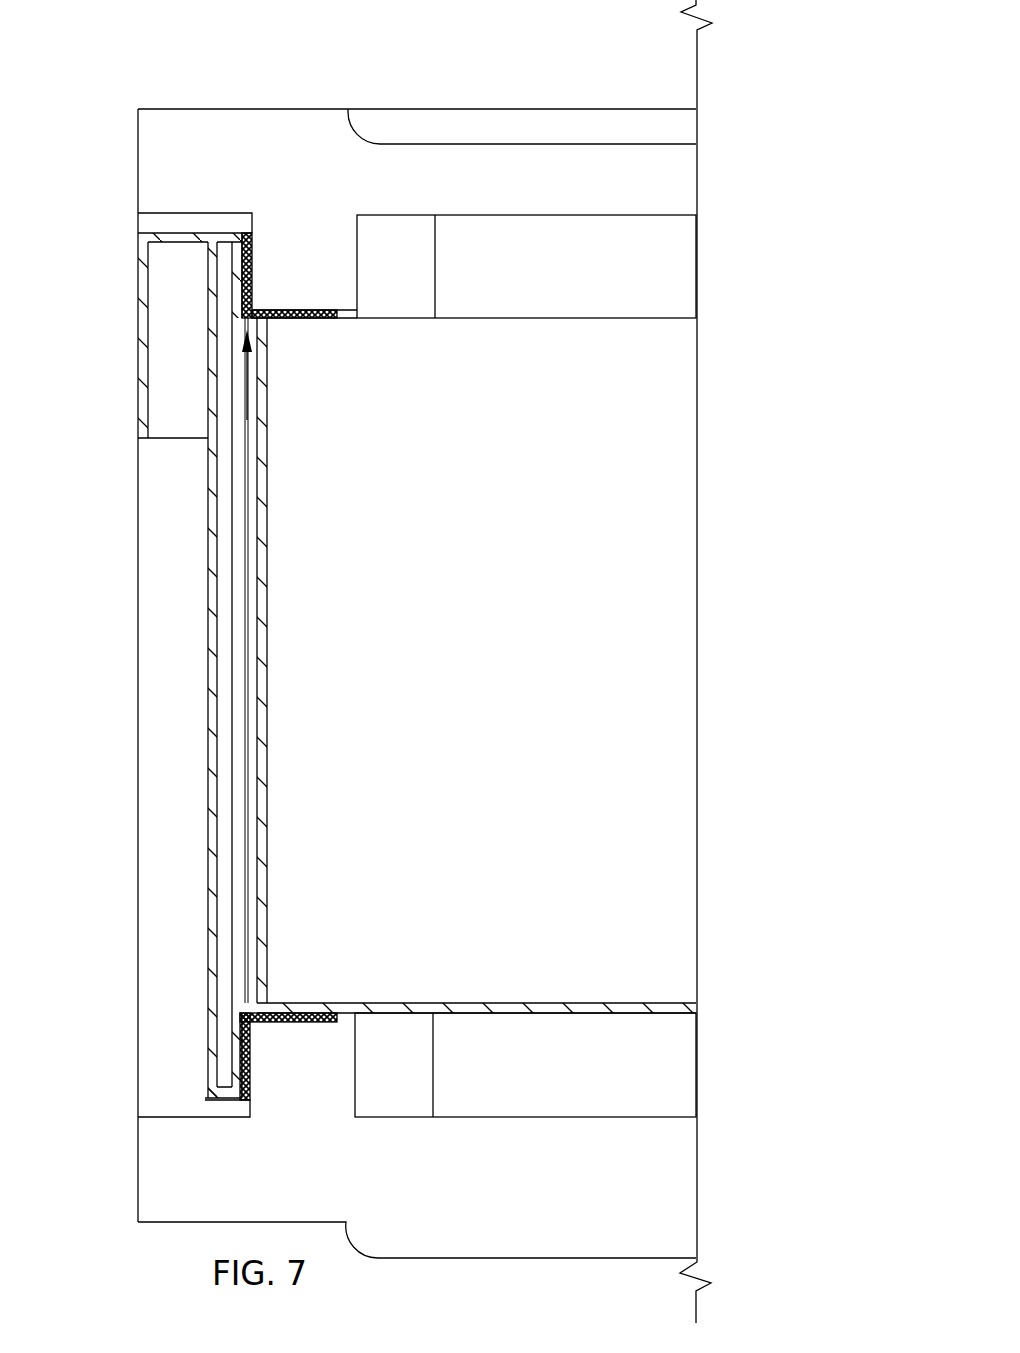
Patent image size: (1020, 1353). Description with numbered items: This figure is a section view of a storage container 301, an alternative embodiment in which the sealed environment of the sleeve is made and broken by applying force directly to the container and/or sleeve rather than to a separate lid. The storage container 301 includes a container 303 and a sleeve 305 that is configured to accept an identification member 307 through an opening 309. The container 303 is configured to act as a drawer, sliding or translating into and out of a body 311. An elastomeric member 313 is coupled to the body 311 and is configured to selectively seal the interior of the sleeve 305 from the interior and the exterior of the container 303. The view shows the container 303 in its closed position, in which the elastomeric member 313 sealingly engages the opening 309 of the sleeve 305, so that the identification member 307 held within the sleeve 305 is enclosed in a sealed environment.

The storage container 301 is at (70, 197).
The container 303 is at (138, 407).
The sleeve 305 is at (266, 668).
The identification member 307 is at (247, 813).
The opening 309 is at (254, 365).
The body 311 is at (317, 182).
The elastomeric member 313 is at (303, 320).